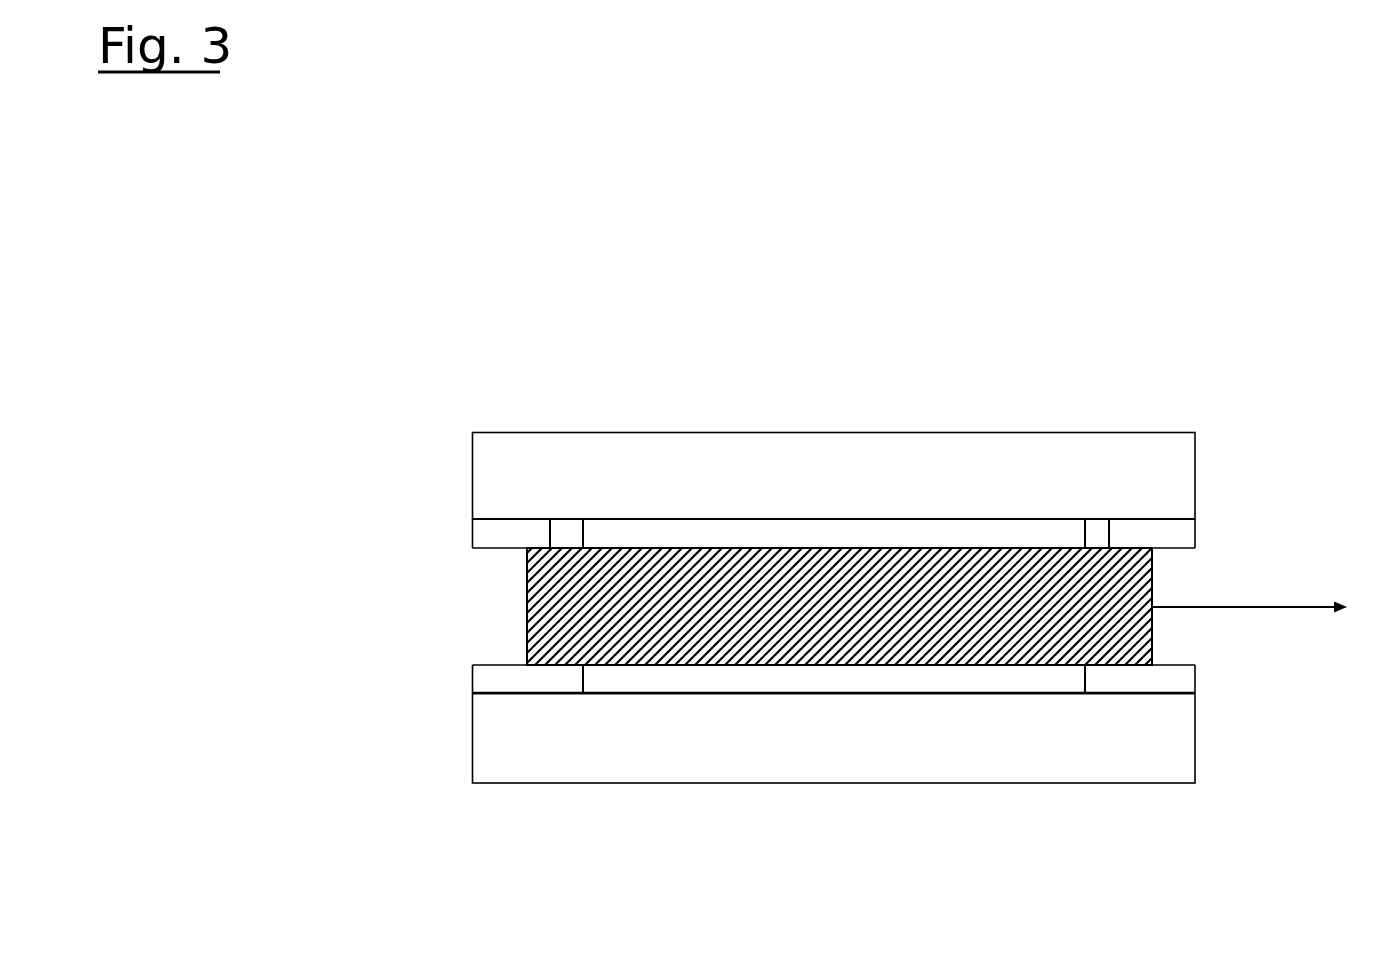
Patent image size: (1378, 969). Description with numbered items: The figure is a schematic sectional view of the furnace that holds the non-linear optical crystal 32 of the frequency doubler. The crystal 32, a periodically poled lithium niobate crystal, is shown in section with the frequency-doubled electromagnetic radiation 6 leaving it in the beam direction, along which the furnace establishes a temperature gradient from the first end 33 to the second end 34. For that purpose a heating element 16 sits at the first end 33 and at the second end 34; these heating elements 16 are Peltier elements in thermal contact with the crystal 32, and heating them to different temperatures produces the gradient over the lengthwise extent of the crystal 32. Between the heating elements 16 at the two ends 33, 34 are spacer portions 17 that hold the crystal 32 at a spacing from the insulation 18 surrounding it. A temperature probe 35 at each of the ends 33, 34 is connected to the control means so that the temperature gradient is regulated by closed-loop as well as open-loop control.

The frequency-doubled electromagnetic radiation 6 is at (1293, 603).
The heating element 16 is at (520, 535).
The spacer portion 17 is at (838, 537).
The insulation 18 is at (674, 492).
The non-linear optical crystal 32 is at (874, 613).
The first end 33 is at (552, 648).
The second end 34 is at (1122, 640).
The temperature probe 35 is at (557, 535).